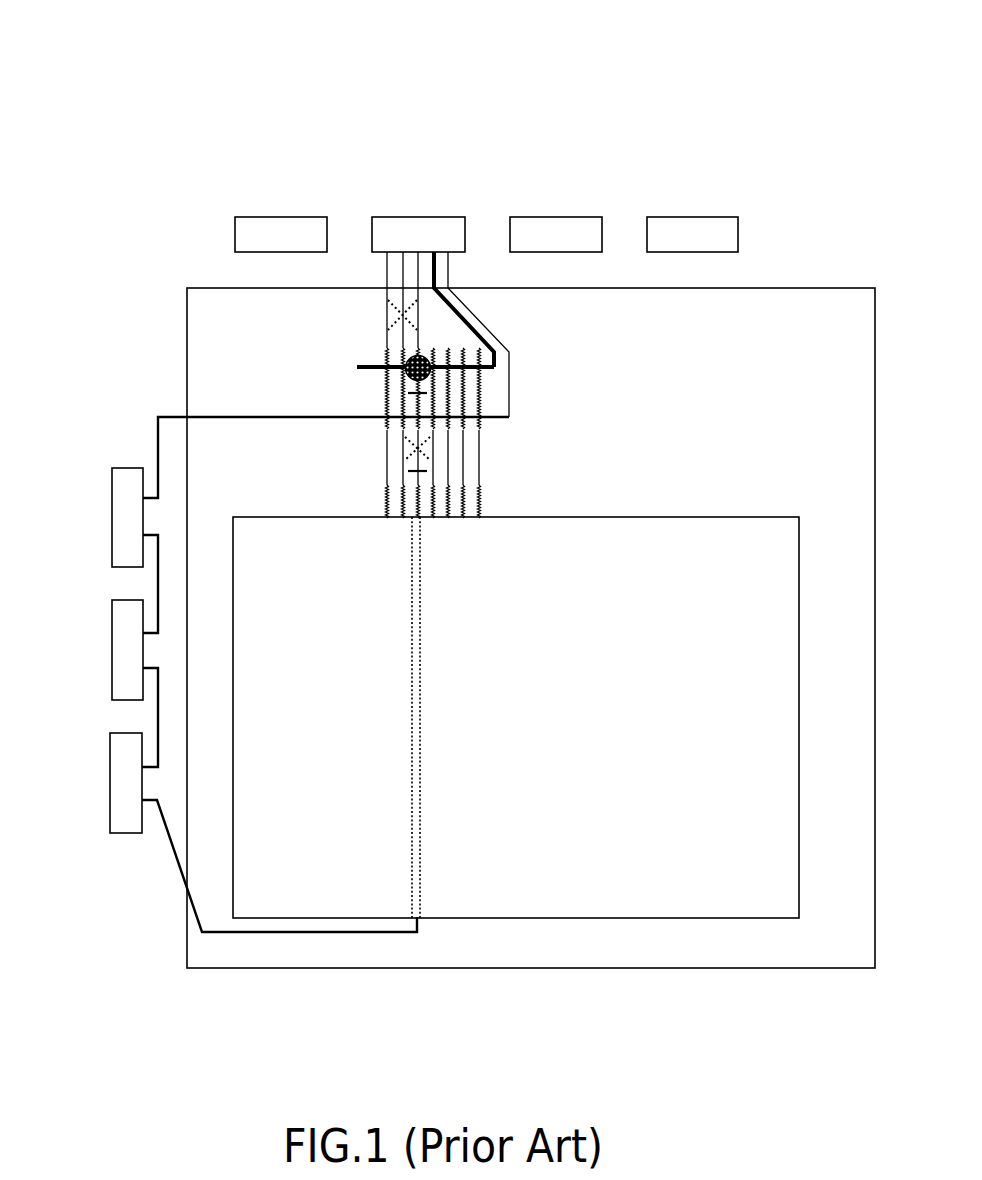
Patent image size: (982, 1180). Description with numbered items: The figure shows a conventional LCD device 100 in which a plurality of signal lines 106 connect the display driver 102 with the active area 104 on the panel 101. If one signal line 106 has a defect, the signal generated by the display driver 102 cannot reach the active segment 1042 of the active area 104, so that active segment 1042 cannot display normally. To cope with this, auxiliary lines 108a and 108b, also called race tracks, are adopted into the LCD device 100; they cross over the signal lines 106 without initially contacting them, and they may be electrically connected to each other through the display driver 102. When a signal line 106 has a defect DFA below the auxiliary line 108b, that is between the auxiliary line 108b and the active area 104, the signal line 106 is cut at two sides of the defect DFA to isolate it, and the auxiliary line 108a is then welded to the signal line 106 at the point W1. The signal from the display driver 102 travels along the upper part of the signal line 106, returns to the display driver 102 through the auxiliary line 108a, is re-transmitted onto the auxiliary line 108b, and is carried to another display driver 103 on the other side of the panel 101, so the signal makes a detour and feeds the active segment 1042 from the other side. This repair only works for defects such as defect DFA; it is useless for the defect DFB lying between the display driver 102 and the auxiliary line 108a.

The LCD device 100 is at (90, 40).
The panel 101 is at (795, 288).
The display driver 102 is at (432, 217).
The display driver 103 is at (112, 507).
The active area 104 is at (669, 681).
The active segment 1042 is at (420, 763).
The signal lines 106 is at (420, 272).
The auxiliary line 108a is at (380, 369).
The auxiliary line 108b is at (510, 350).
The welding point W1 is at (430, 382).
The defect DFA is at (407, 437).
The defect DFB is at (398, 308).